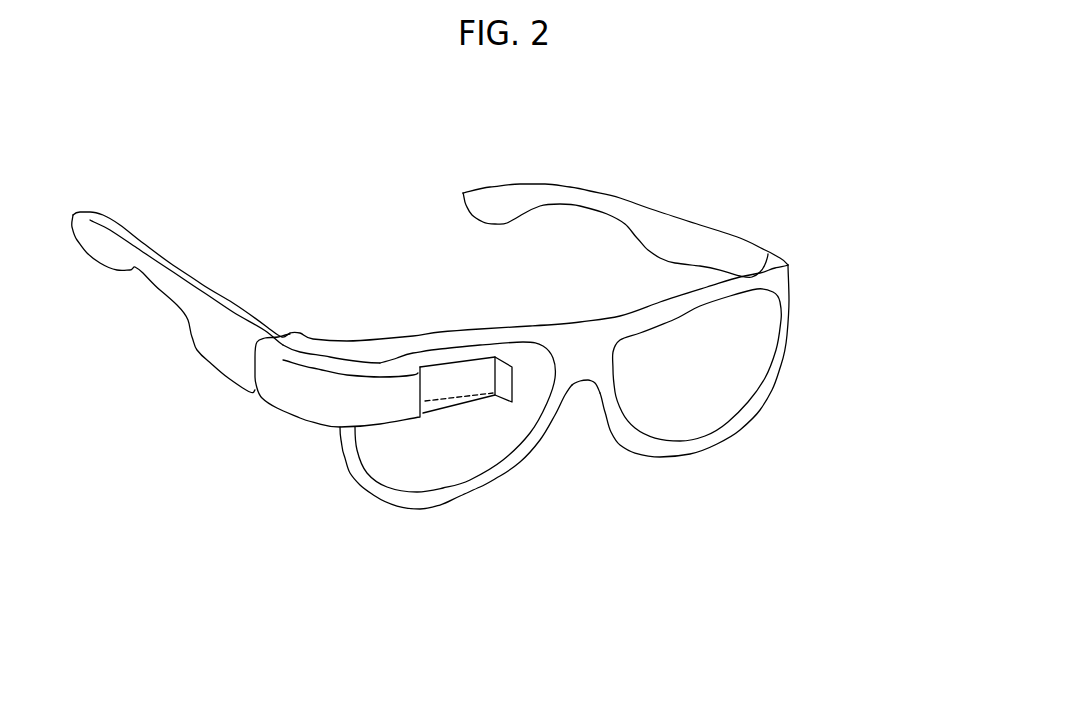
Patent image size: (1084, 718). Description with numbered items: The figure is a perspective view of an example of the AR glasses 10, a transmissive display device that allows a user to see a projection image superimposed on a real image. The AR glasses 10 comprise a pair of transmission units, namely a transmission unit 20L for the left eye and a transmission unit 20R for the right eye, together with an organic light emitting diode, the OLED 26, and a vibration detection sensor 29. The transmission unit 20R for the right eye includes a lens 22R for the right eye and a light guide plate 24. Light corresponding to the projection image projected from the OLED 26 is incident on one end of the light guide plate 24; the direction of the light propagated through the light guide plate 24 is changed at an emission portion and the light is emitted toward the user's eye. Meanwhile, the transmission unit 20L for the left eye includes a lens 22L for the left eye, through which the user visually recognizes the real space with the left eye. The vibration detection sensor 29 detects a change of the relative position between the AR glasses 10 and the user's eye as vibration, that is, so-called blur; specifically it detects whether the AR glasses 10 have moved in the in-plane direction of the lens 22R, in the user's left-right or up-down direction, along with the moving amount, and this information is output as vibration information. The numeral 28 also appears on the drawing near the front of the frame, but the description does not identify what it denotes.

The AR glasses 10 is at (777, 117).
The transmission unit for a right eye 20R is at (373, 523).
The transmission unit for a left eye 20L is at (720, 452).
The lens for a right eye 22R is at (440, 477).
The lens for a left eye 22L is at (668, 428).
The light guide plate 24 is at (447, 378).
The organic light emitting diode (OLED) 26 is at (303, 382).
The front frame 28 is at (530, 368).
The vibration detection sensor 29 is at (318, 393).